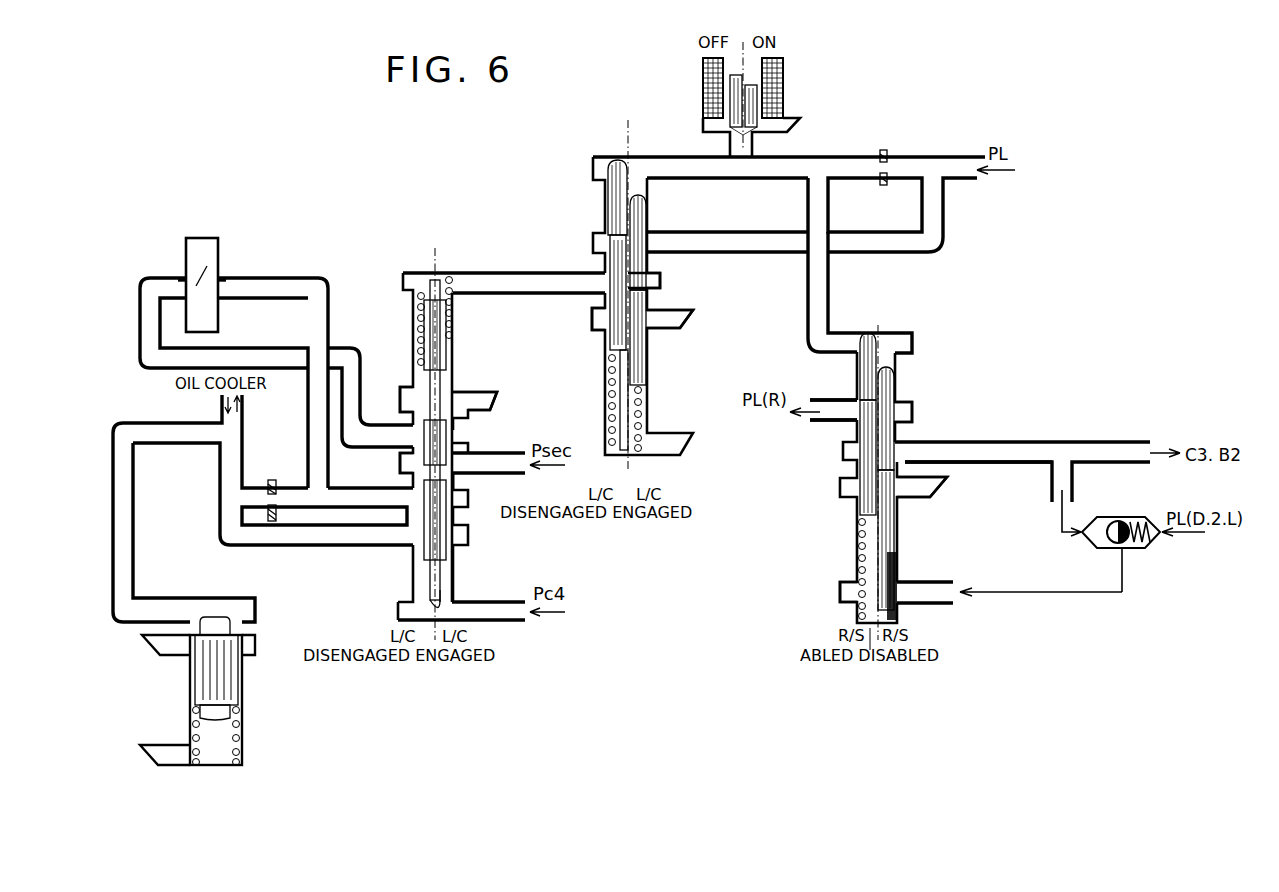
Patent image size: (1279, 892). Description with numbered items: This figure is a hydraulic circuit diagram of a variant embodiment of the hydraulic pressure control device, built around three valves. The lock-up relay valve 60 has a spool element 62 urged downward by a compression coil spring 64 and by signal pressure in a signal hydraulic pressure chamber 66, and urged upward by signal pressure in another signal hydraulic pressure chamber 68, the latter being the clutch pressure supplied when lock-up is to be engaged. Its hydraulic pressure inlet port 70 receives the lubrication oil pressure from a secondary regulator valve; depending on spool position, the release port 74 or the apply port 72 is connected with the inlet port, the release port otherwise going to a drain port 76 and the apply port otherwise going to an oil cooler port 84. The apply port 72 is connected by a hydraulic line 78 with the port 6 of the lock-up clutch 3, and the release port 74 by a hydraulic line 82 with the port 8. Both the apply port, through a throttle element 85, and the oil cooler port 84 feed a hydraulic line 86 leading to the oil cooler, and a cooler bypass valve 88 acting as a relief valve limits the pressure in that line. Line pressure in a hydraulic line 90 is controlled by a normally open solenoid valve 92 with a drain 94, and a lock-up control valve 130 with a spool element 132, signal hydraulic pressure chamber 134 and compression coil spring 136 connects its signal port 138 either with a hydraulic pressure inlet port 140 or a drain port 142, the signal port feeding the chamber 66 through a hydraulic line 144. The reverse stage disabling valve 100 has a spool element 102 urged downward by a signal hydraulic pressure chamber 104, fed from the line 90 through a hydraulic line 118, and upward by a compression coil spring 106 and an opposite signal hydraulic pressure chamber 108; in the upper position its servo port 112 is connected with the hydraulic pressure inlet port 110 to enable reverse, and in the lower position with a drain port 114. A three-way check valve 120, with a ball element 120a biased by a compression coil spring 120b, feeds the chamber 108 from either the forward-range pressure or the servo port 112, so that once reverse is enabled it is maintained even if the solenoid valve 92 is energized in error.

The lock-up clutch 3 is at (220, 253).
The port 6 is at (222, 291).
The port 8 is at (180, 283).
The lock-up relay valve 60 is at (426, 266).
The spool element 62 is at (455, 426).
The compression coil spring 64 is at (455, 310).
The signal hydraulic pressure chamber 66 is at (413, 313).
The signal hydraulic pressure chamber 68 is at (445, 601).
The hydraulic pressure inlet port 70 is at (455, 470).
The apply port 72 is at (412, 493).
The release port 74 is at (413, 430).
The drain port 76 is at (480, 400).
The hydraulic line 78 is at (312, 411).
The hydraulic line 82 is at (260, 358).
The oil cooler port 84 is at (406, 535).
The throttle element 85 is at (270, 480).
The hydraulic line 86 is at (228, 472).
The cooler bypass valve 88 is at (243, 673).
The hydraulic line 90 is at (729, 167).
The solenoid valve 92 is at (792, 87).
The drain port 94 is at (795, 125).
The reverse stage disabling valve 100 is at (905, 383).
The spool element 102 is at (926, 421).
The signal hydraulic pressure chamber 104 is at (898, 344).
The compression coil spring 106 is at (897, 573).
The signal hydraulic pressure chamber 108 is at (851, 603).
The hydraulic pressure inlet port 110 is at (828, 417).
The servo port 112 is at (912, 470).
The drain port 114 is at (918, 498).
The hydraulic line 118 is at (826, 268).
The three-way check valve 120 is at (1133, 536).
The ball element 120a is at (1108, 519).
The compression coil spring 120b is at (1148, 550).
The lock-up control valve 130 is at (622, 150).
The spool element 132 is at (640, 287).
The signal hydraulic pressure chamber 134 is at (648, 182).
The compression coil spring 136 is at (646, 394).
The signal port 138 is at (592, 288).
The hydraulic pressure inlet port 140 is at (650, 244).
The drain port 142 is at (676, 331).
The hydraulic line 144 is at (538, 273).